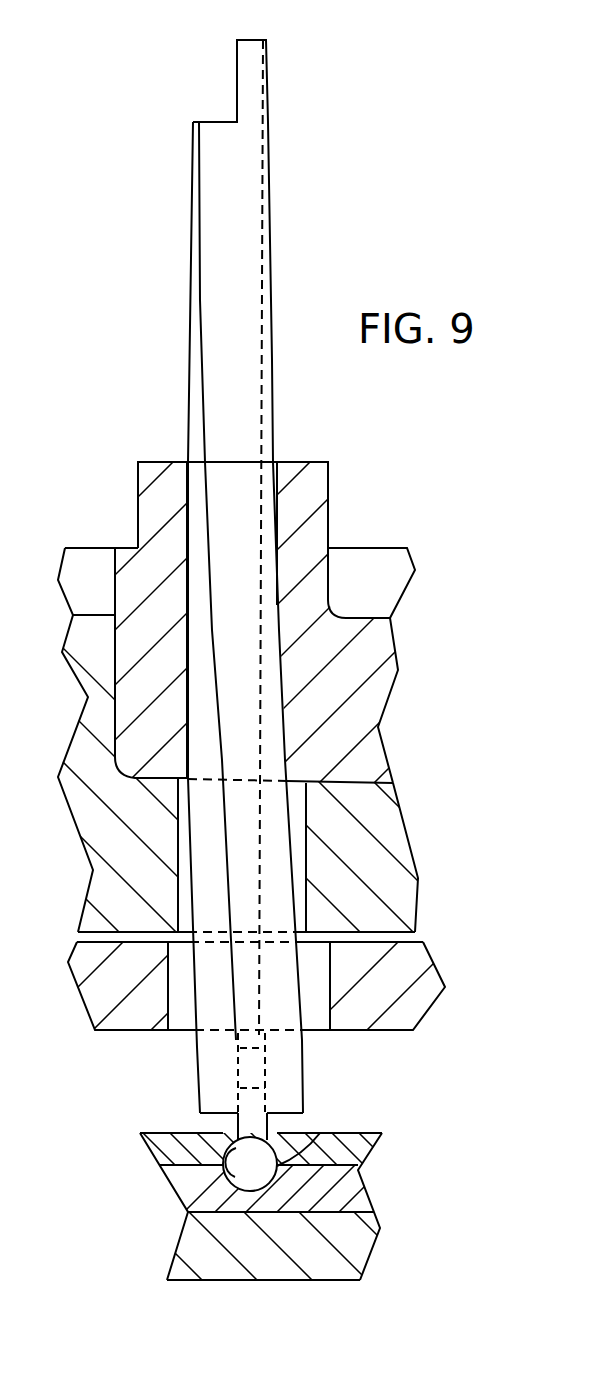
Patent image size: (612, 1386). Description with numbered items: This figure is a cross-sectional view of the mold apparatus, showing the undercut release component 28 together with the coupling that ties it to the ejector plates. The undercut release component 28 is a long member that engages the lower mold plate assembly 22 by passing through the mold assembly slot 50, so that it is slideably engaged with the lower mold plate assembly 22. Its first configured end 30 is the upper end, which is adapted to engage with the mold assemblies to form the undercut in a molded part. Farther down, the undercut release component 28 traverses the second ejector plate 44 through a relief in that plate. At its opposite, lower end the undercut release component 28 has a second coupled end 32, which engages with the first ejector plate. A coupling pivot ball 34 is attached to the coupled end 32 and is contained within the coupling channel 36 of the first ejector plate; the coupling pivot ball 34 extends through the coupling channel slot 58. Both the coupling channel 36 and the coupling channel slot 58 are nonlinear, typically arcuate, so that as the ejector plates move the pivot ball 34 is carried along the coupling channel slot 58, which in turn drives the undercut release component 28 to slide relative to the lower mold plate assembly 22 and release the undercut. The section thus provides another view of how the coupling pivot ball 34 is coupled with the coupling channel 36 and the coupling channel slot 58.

The lower mold plate assembly 22 is at (393, 630).
The undercut release component 28 is at (268, 235).
The first configured end 30 is at (267, 55).
The second coupled end 32 is at (305, 1092).
The coupling pivot ball 34 is at (322, 1135).
The coupling channel 36 is at (228, 1133).
The second ejector plate 44 is at (433, 962).
The mold assembly slot 50 is at (283, 466).
The coupling channel slot 58 is at (228, 1132).